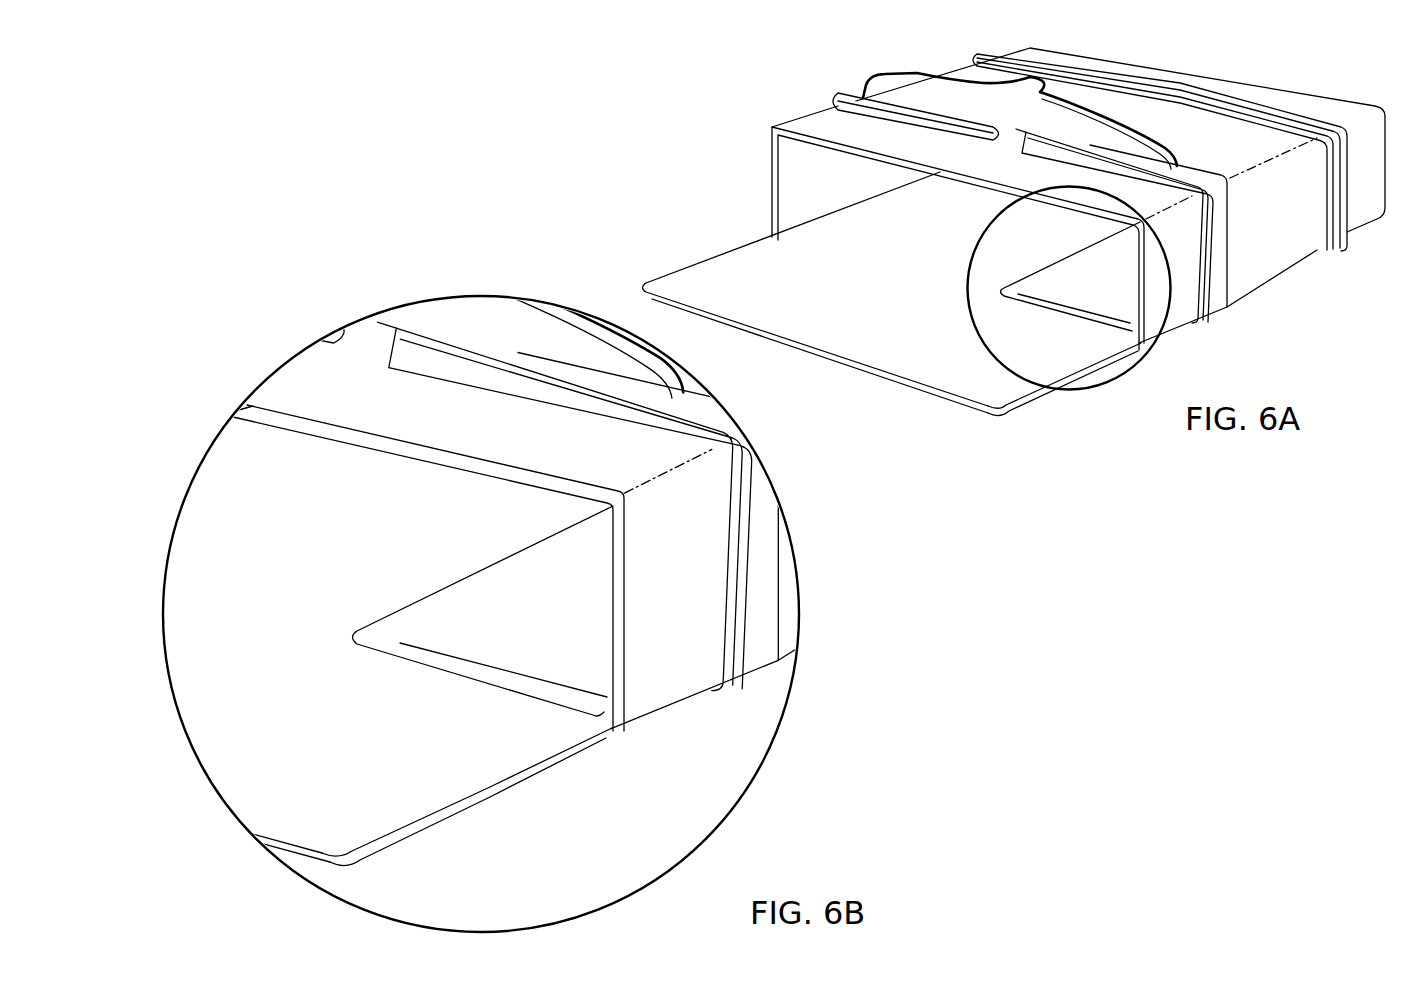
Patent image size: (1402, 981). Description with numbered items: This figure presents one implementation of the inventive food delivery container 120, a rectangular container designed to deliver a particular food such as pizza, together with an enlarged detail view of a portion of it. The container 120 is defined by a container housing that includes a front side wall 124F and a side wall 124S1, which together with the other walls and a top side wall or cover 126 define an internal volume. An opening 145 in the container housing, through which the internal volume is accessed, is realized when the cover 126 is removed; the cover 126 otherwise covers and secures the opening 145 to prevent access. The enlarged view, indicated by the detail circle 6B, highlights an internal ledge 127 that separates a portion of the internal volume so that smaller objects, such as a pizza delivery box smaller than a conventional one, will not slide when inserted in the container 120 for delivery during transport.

In FIG. 6A, the food delivery container 120 is at (1190, 68).
In FIG. 6B, the food delivery container 120 is at (539, 429).
In FIG. 6A, the front side wall 124F is at (820, 130).
In FIG. 6B, the front side wall 124F is at (285, 385).
In FIG. 6A, the first side face of housing 124S1 is at (1277, 250).
In FIG. 6B, the first side face of housing 124S1 is at (650, 697).
In FIG. 6A, the opening 145 is at (802, 200).
In FIG. 6B, the opening 145 is at (230, 486).
In FIG. 6A, the top side wall/cover 126 is at (990, 393).
In FIG. 6B, the top side wall/cover 126 is at (437, 787).
In FIG. 6A, the internal ledge 127 is at (1112, 312).
In FIG. 6B, the internal ledge 127 is at (565, 682).
In FIG. 6A, the detail view circle 6B is at (1147, 348).